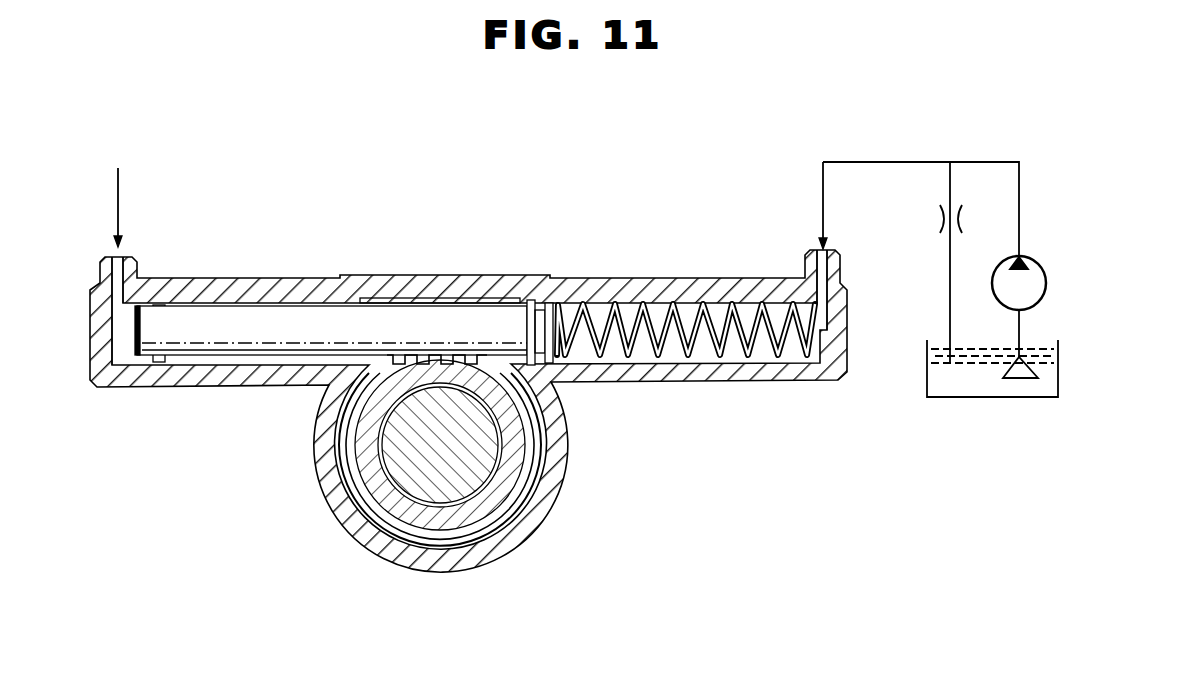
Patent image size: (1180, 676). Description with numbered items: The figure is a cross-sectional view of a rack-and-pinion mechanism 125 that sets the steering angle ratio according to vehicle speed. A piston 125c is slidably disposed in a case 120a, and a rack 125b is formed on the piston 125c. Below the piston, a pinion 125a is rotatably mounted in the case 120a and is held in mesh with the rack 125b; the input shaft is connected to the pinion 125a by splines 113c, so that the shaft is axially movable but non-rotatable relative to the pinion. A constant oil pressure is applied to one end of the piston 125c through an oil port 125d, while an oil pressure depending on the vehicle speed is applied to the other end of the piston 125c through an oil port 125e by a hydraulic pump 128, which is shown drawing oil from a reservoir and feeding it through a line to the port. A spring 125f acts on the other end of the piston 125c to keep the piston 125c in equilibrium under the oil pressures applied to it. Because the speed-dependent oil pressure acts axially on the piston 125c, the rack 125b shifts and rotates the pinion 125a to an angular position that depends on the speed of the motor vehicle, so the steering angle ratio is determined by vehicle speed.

The case 120a is at (172, 388).
The rack-and-pinion mechanism 125 is at (504, 262).
The pinion 125a is at (512, 433).
The rack 125b is at (294, 362).
The piston 125c is at (422, 318).
The oil port 125d is at (122, 256).
The oil port 125e is at (815, 246).
The spring 125f is at (720, 302).
The hydraulic pump 128 is at (1045, 274).
The splines 113c is at (468, 468).